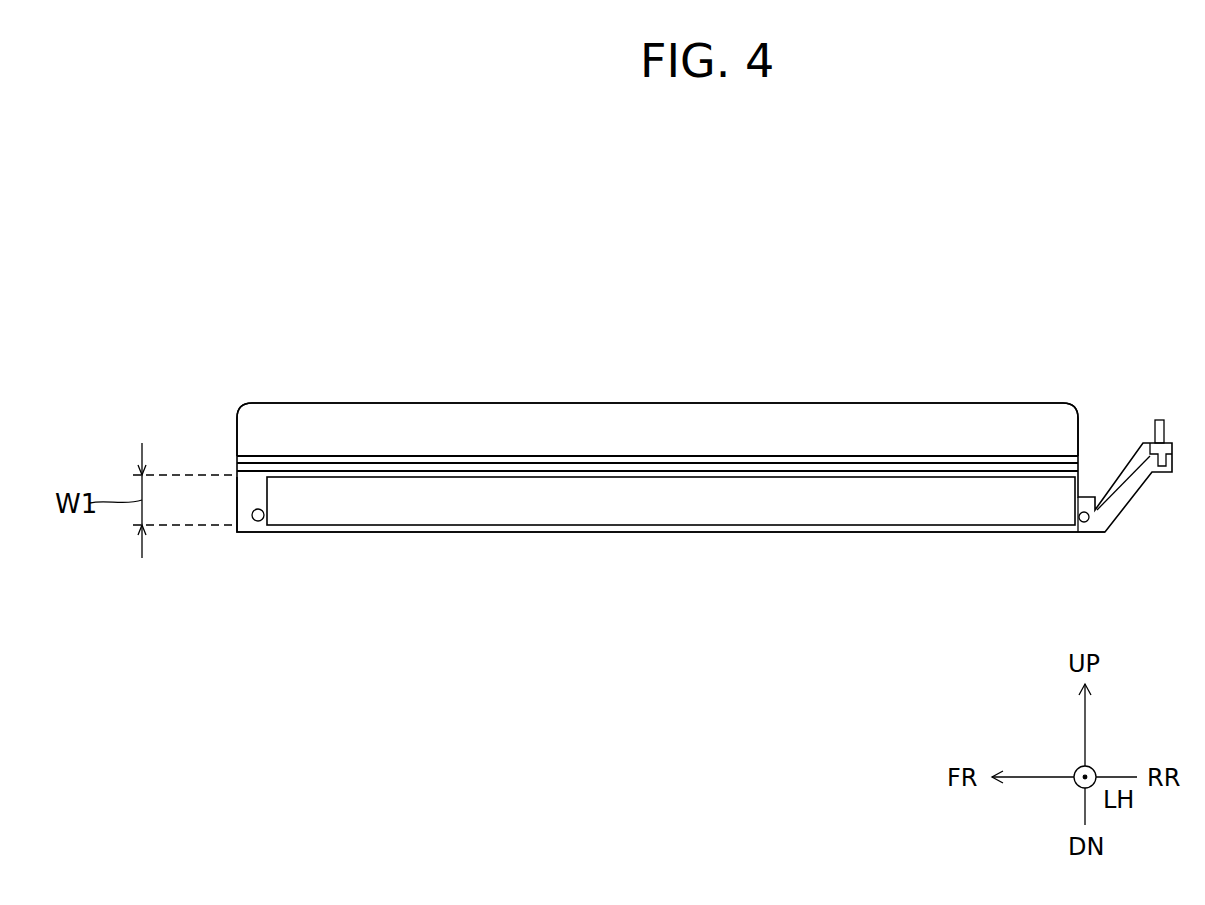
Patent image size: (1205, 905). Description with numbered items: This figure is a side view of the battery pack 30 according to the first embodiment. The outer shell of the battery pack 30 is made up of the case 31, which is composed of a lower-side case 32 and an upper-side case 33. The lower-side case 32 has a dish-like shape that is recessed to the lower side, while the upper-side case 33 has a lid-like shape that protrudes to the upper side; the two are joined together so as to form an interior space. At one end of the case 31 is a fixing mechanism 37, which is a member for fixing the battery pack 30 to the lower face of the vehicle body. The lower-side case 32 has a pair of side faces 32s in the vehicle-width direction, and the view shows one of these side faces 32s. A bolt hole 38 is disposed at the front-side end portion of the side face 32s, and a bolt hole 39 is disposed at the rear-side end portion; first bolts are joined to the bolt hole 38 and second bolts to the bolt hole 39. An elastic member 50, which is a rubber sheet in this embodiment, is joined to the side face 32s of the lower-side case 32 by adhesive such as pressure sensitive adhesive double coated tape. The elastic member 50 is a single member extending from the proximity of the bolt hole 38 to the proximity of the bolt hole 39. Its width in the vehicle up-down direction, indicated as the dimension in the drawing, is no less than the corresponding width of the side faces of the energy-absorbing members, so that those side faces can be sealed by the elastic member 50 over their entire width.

The battery pack 30 is at (1088, 260).
The case 31 is at (268, 312).
The lower-side case 32 is at (236, 488).
The upper-side case 33 is at (232, 446).
The side face 32s is at (257, 490).
The fixing mechanism 37 is at (1159, 420).
The bolt hole 38 is at (258, 522).
The bolt hole 39 is at (1084, 523).
The elastic member 50 is at (1033, 508).